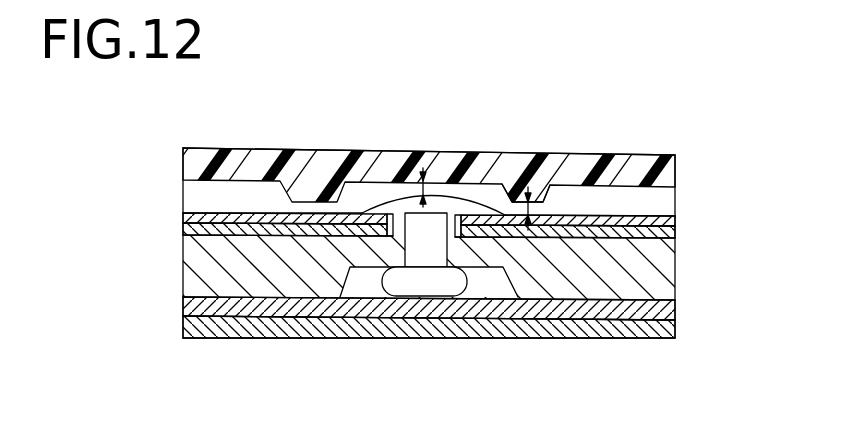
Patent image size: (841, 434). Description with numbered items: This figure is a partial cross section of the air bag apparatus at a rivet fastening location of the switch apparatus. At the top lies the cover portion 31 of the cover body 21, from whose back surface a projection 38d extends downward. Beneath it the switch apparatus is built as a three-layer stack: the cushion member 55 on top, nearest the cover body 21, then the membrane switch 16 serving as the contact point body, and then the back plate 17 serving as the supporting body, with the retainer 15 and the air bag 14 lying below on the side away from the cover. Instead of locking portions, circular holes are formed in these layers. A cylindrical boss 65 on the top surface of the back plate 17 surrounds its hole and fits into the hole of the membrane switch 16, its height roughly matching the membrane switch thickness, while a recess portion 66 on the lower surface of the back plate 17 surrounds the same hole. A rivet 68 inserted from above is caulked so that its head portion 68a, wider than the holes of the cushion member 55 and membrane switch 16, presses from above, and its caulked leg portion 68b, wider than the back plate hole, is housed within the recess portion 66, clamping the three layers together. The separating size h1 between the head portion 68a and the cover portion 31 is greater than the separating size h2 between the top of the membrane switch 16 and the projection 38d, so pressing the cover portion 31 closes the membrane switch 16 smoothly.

The cover body 21 is at (350, 148).
The cover portion 31 is at (676, 173).
The projection 38d is at (548, 182).
The cushion member 55 is at (676, 219).
The membrane switch 16 is at (676, 232).
The back plate 17 is at (676, 284).
The air bag 14 is at (676, 310).
The retainer 15 is at (676, 330).
The boss 65 is at (395, 208).
The recess portion 66 is at (483, 287).
The rivet 68 is at (447, 214).
The head portion 68a is at (448, 211).
The leg portion 68b is at (420, 294).
The separating size h1 is at (423, 168).
The separating size h2 is at (530, 187).